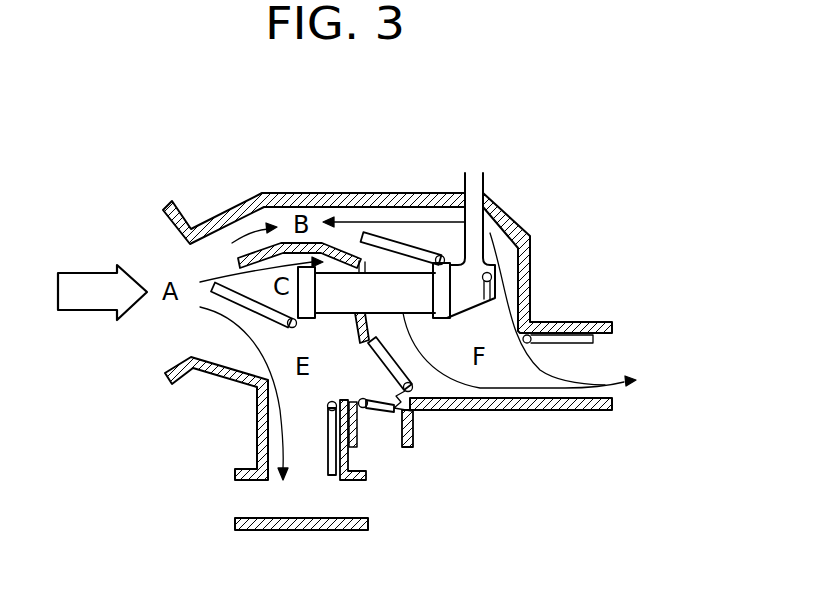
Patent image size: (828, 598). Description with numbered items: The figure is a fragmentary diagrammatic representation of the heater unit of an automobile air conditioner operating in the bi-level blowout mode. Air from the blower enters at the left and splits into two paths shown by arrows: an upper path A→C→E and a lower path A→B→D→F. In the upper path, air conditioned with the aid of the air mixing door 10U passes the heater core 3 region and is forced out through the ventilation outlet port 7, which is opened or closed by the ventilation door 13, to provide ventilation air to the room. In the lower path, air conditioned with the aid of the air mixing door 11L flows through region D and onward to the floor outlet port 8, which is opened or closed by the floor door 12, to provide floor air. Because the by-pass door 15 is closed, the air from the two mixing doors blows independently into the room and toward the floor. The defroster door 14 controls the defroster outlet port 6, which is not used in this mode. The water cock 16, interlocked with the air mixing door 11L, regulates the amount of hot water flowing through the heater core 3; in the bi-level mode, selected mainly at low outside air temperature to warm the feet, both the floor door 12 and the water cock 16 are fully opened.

The heater core 3 is at (340, 272).
The air mixing door 10U is at (227, 283).
The air mixing door 11L is at (400, 245).
The air flow path region D is at (410, 262).
The water cock 16 is at (492, 283).
The floor door 12 is at (586, 322).
The floor outlet port 8 is at (607, 360).
The by-pass door 15 is at (403, 367).
The defroster door 14 is at (389, 416).
The ventilation door 13 is at (327, 444).
The defroster outlet port 6 is at (372, 448).
The ventilation outlet port 7 is at (255, 495).